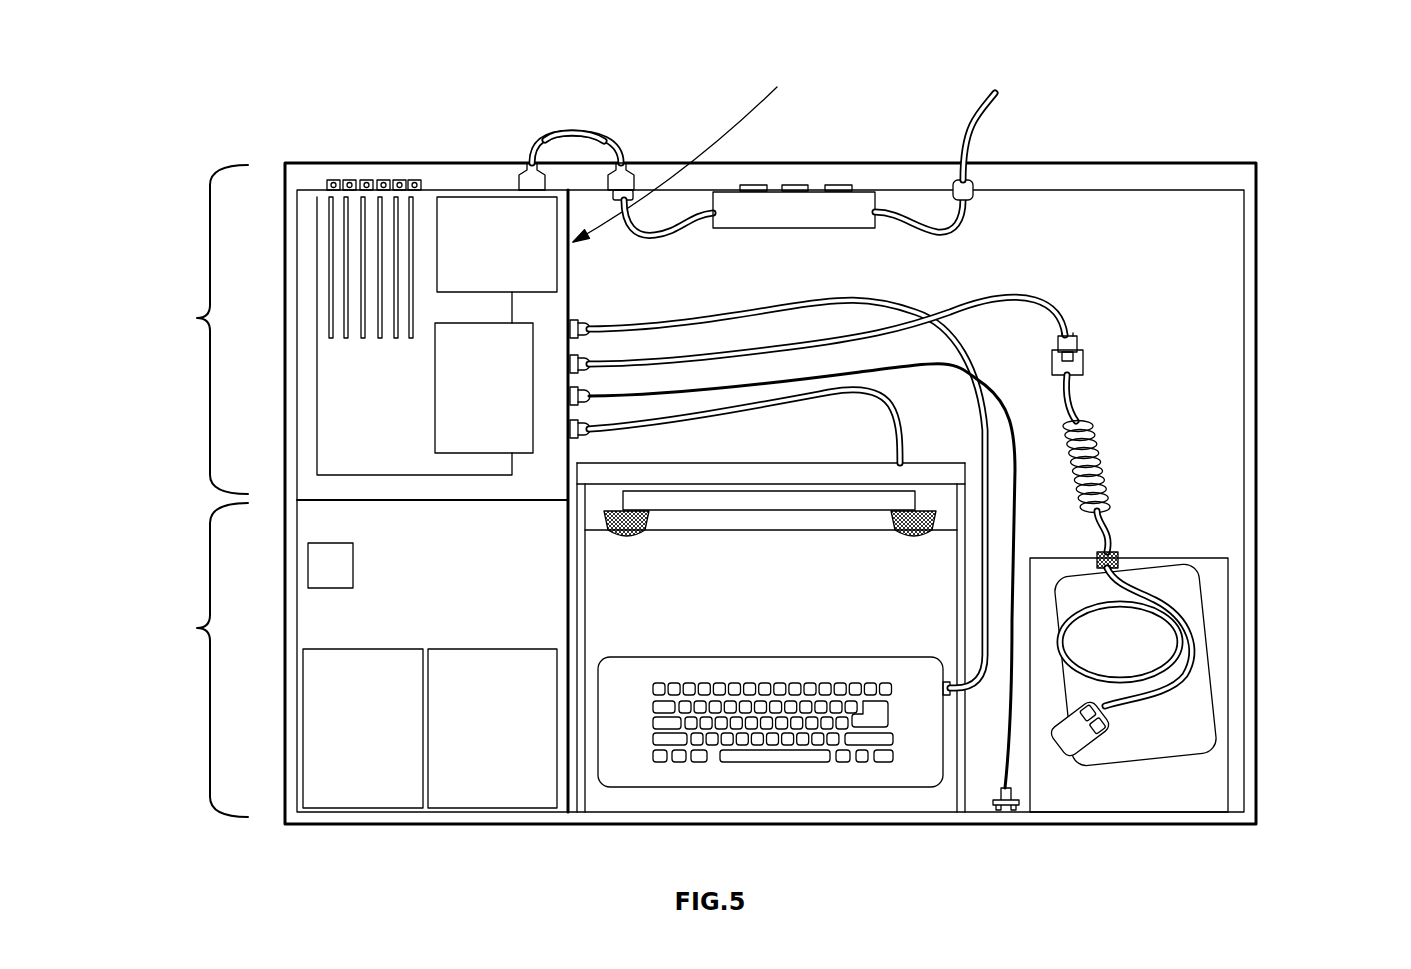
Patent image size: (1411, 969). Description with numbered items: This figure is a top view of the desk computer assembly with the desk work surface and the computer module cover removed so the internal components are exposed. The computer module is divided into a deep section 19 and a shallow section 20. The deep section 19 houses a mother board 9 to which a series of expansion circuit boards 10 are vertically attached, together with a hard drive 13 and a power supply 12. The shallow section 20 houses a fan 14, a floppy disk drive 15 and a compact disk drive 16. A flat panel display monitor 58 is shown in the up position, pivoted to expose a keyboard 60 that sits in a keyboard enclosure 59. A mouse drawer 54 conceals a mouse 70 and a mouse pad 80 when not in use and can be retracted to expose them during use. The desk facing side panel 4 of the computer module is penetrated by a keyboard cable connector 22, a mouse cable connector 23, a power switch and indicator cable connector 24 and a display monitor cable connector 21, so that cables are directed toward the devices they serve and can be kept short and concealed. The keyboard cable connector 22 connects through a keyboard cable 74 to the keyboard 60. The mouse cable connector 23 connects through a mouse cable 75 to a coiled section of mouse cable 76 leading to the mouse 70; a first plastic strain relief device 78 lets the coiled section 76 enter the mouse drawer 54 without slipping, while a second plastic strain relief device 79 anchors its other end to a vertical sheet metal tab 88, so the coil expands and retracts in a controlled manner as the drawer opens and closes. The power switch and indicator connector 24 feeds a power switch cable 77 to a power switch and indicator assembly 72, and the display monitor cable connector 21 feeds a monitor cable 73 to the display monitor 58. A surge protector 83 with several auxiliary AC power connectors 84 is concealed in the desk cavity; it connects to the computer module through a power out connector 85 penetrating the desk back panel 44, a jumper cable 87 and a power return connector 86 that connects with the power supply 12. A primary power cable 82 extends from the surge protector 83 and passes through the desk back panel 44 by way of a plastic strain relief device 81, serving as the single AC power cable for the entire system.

The desk facing side panel 4 is at (684, 154).
The mother board 9 is at (322, 278).
The expansion circuit boards 10 is at (360, 222).
The power supply 12 is at (463, 215).
The hard drive 13 is at (447, 348).
The fan 14 is at (327, 562).
The floppy disk drive 15 is at (318, 693).
The compact disk drive 16 is at (494, 790).
The deep section 19 is at (199, 329).
The shallow section 20 is at (199, 660).
The display monitor cable connector 21 is at (584, 436).
The keyboard cable connector 22 is at (582, 322).
The mouse cable connector 23 is at (586, 371).
The power switch and indicator cable connector 24 is at (582, 404).
The desk back panel 44 is at (1083, 187).
The mouse drawer 54 is at (1165, 790).
The flat panel display monitor 58 is at (670, 505).
The keyboard enclosure 59 is at (810, 818).
The keyboard 60 is at (880, 780).
The mouse 70 is at (1063, 758).
The power switch and indicator assembly 72 is at (1010, 812).
The monitor cable 73 is at (893, 413).
The keyboard cable 74 is at (867, 302).
The mouse cable 75 is at (1043, 302).
The coiled section of mouse cable 76 is at (1102, 462).
The power switch cable 77 is at (907, 368).
The first plastic strain relief device 78 is at (1117, 555).
The second plastic strain relief device 79 is at (1070, 337).
The mouse pad 80 is at (1193, 705).
The plastic strain relief device 81 is at (970, 183).
The primary power cable 82 is at (980, 115).
The surge protector 83 is at (847, 207).
The auxiliary AC power connectors 84 is at (793, 183).
The power out connector 85 is at (520, 170).
The power return connector 86 is at (622, 178).
The jumper cable 87 is at (598, 130).
The vertical sheet metal tab 88 is at (1077, 349).